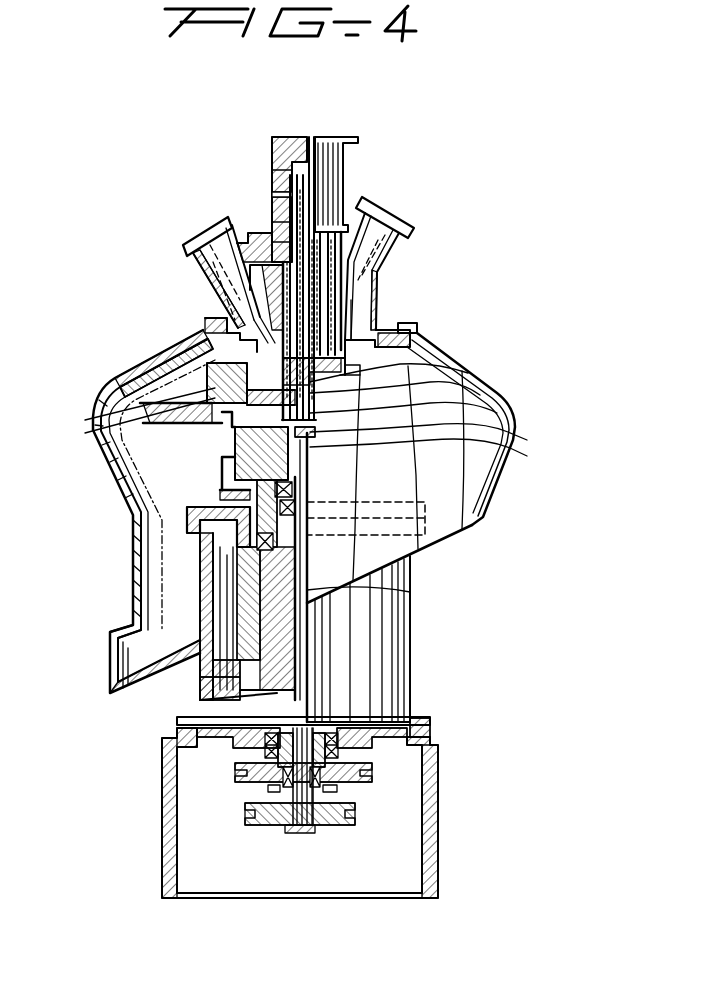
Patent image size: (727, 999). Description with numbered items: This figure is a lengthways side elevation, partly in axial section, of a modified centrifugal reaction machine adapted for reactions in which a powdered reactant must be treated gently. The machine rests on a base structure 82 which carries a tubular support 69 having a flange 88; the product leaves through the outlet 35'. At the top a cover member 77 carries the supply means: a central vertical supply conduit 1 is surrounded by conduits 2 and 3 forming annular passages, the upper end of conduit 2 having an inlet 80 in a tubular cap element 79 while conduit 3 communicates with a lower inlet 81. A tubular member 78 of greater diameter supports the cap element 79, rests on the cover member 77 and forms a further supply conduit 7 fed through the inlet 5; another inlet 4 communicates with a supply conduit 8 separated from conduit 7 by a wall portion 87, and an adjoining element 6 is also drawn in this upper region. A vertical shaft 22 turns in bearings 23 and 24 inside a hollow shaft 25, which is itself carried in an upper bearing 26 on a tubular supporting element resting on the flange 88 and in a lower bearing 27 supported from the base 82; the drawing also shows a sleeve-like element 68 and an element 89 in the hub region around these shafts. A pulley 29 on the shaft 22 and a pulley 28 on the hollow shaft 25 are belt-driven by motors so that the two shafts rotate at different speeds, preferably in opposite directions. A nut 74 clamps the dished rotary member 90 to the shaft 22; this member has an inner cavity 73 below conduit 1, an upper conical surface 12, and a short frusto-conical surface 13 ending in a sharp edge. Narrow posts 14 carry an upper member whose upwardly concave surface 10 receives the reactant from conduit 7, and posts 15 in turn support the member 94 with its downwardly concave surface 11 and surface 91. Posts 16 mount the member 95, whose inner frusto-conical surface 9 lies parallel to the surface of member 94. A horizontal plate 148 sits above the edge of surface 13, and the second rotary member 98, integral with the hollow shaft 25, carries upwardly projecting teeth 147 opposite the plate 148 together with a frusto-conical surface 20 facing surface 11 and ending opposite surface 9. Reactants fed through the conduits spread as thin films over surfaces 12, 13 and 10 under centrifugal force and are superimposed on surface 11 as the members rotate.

The vertical supply conduit 1 is at (322, 172).
The supply conduit 2 is at (315, 185).
The supply conduit 3 is at (313, 200).
The inlet 4 is at (210, 243).
The inlet 5 is at (373, 221).
The liner 6 is at (218, 298).
The supply conduit 7 is at (226, 292).
The supply conduit 8 is at (373, 337).
The frusto-conical surface 9 is at (145, 360).
The frusto-conical surface 10 is at (470, 396).
The frusto-conical surface 11 is at (118, 376).
The conical surface 12 is at (470, 428).
The frusto-conical surface 13 is at (240, 445).
The supporting posts 14 is at (468, 412).
The supporting posts 15 is at (436, 372).
The posts 16 is at (185, 335).
The frusto-conical surface 20 is at (143, 405).
The vertical shaft 22 is at (407, 563).
The bearing 23 is at (485, 516).
The bearing 24 is at (340, 742).
The hollow shaft 25 is at (300, 590).
The upper bearing 26 is at (312, 551).
The bearing 27 is at (430, 722).
The pulley 28 is at (357, 778).
The pulley 29 is at (357, 817).
The outlet 35' is at (110, 659).
The sleeve 68 is at (205, 613).
The tubular support 69 is at (340, 632).
The inner cavity 73 is at (517, 438).
The nut 74 is at (510, 458).
The cover member 77 is at (250, 478).
The tubular member 78 is at (260, 242).
The tubular cap element 79 is at (332, 156).
The inlet 80 is at (272, 152).
The lower inlet 81 is at (270, 190).
The base structure 82 is at (165, 793).
The wall portion 87 is at (370, 312).
The flange 88 is at (205, 683).
The bearing sleeve 89 is at (205, 577).
The rotary member 90 is at (262, 497).
The surface 91 is at (415, 328).
The member 94 is at (125, 363).
The member 95 is at (165, 345).
The rotary member 98 is at (245, 460).
The teeth 147 is at (240, 420).
The horizontal plate 148 is at (235, 400).